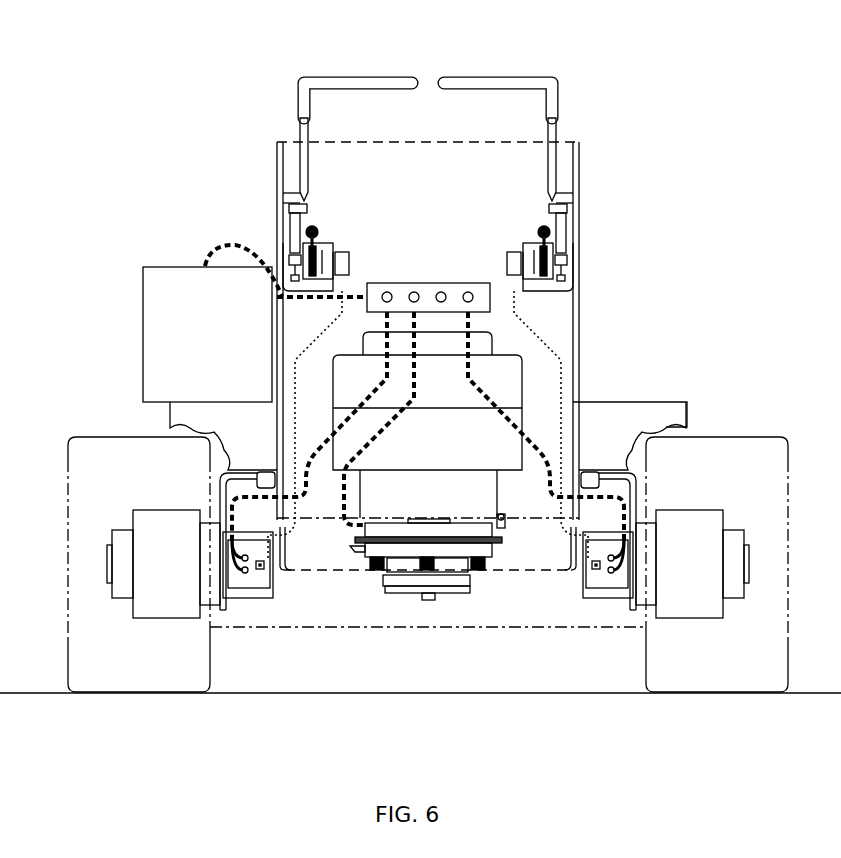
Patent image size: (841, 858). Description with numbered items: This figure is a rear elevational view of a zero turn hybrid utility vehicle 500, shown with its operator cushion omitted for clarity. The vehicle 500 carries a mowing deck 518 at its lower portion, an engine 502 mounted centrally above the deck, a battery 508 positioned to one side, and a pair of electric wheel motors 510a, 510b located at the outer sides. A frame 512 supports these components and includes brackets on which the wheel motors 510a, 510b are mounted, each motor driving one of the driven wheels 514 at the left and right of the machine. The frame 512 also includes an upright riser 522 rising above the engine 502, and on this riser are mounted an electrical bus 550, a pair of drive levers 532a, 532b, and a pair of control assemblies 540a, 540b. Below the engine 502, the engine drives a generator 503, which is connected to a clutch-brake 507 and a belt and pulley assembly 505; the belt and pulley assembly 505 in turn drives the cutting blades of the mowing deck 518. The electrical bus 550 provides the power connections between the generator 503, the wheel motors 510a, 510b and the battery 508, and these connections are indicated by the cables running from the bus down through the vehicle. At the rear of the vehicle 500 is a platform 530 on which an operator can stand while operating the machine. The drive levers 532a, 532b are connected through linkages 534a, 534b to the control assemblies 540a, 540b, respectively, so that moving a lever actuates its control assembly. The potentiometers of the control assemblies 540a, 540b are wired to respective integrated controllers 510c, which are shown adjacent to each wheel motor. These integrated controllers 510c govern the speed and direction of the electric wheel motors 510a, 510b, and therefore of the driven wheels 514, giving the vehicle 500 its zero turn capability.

The zero turn vehicle 500 is at (172, 99).
The engine 502 is at (450, 452).
The generator 503 is at (480, 551).
The belt and pulley assembly 505 is at (458, 595).
The clutch-brake 507 is at (455, 575).
The battery 508 is at (170, 267).
The electric wheel motor 510a is at (690, 510).
The electric wheel motor 510b is at (165, 510).
The integrated controller 510c is at (265, 580).
The frame 512 is at (634, 478).
The driven wheel 514 is at (112, 437).
The deck 518 is at (428, 628).
The upright riser 522 is at (426, 142).
The platform 530 is at (315, 568).
The drive lever 532a is at (497, 77).
The drive lever 532b is at (360, 77).
The linkage 534a is at (573, 245).
The linkage 534b is at (283, 245).
The control assembly 540a is at (531, 219).
The control assembly 540b is at (325, 219).
The electrical bus 550 is at (430, 283).